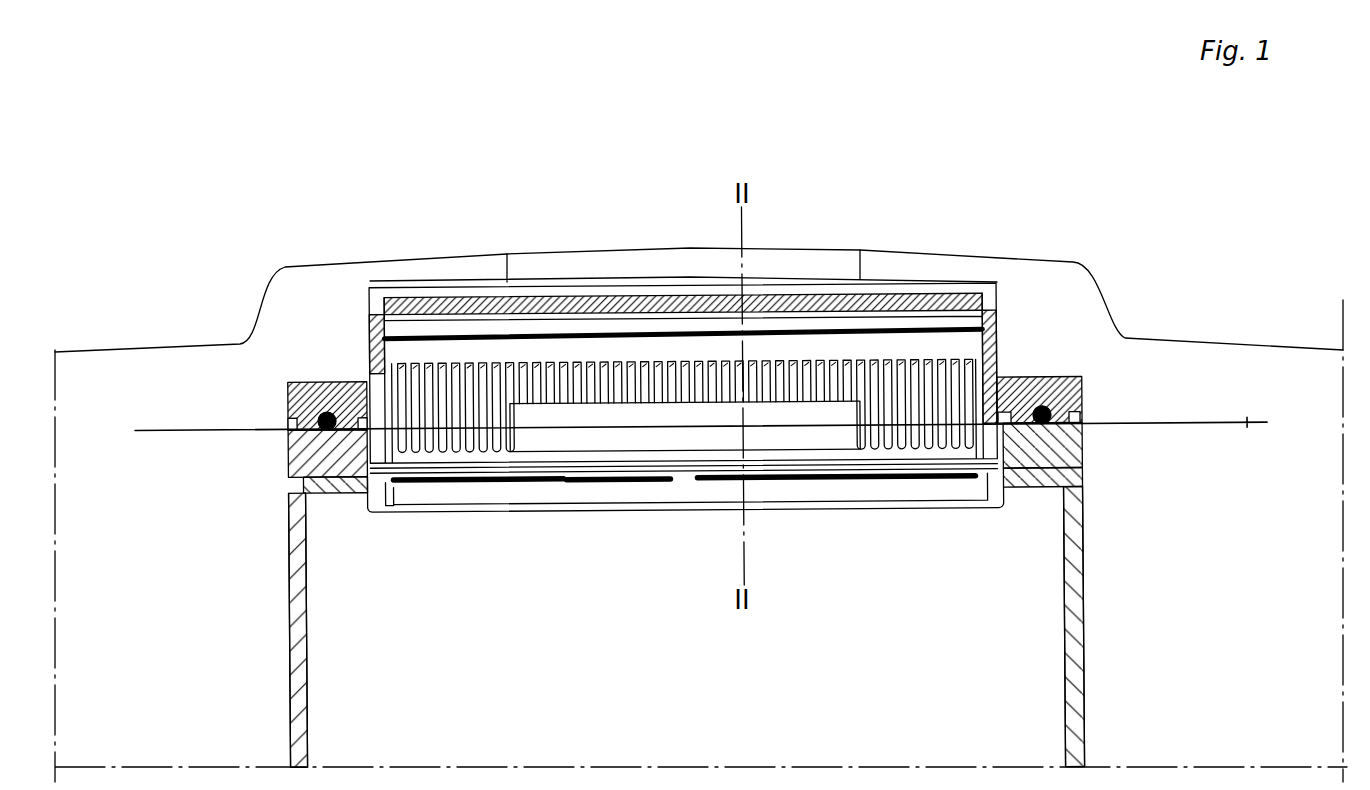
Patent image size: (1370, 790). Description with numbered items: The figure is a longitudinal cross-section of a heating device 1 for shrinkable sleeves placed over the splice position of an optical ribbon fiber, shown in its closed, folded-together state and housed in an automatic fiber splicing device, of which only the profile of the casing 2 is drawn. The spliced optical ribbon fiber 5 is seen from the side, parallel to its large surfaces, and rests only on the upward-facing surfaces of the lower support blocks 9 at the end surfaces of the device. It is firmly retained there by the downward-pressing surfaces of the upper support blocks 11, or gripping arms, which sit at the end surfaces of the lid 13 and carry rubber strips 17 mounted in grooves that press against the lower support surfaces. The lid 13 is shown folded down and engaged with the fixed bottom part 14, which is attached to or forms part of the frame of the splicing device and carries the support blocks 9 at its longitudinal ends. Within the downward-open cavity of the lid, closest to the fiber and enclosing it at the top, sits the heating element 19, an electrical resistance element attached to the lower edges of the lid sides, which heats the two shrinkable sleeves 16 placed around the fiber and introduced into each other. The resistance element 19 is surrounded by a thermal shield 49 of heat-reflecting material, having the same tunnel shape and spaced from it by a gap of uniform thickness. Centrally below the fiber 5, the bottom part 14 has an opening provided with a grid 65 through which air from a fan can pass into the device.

The heating device 1 is at (703, 158).
The casing of the fiber splicing device 2 is at (1250, 343).
The spliced optical ribbon fiber 5 is at (143, 430).
The lower support blocks 9 is at (300, 450).
The upper support blocks 11 is at (312, 402).
The lid 13 is at (660, 303).
The fixed bottom part 14 is at (1070, 500).
The shrinkable sleeves 16 is at (558, 183).
The rubber strips 17 is at (1042, 402).
The heating element 19 is at (757, 368).
The thermal shield 49 is at (472, 336).
The grid 65 is at (563, 478).